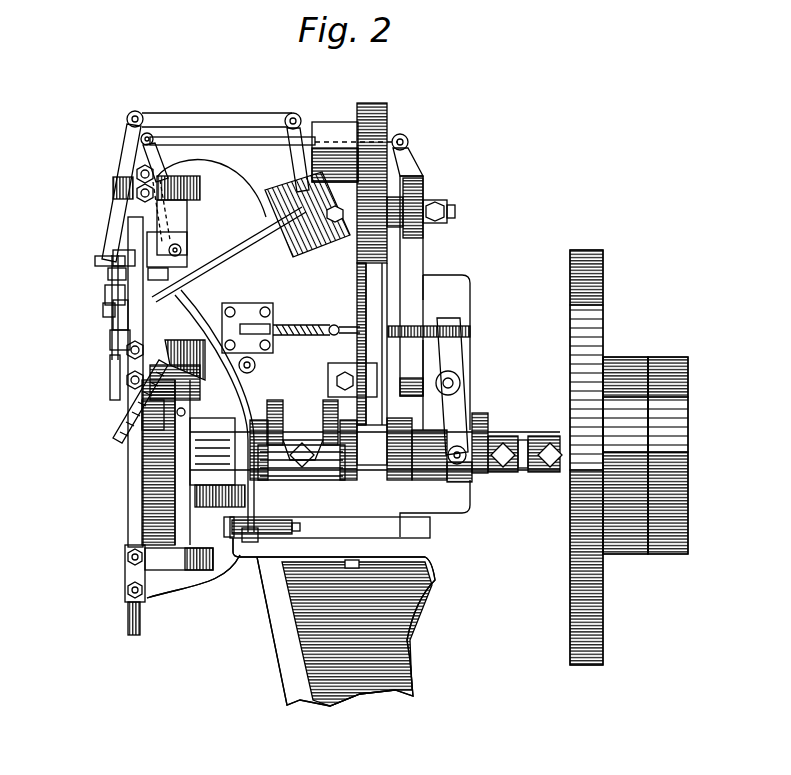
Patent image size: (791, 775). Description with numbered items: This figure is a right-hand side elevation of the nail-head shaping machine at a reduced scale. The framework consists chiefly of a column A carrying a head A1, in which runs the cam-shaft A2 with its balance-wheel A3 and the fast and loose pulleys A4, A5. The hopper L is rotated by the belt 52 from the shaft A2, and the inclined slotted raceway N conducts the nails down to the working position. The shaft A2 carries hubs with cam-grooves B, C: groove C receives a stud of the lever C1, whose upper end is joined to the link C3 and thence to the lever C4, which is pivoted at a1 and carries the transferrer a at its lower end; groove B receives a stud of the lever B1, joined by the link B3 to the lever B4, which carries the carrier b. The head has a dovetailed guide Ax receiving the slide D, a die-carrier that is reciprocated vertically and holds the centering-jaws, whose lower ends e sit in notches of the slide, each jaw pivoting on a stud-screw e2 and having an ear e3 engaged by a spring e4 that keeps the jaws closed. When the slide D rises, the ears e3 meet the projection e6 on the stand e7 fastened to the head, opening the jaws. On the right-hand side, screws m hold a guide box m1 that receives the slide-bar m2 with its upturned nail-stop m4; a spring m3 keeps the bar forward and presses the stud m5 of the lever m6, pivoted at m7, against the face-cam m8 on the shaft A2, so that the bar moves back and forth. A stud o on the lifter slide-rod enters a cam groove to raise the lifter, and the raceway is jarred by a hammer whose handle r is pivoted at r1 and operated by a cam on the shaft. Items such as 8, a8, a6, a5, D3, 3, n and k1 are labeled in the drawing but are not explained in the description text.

The link B3 is at (192, 120).
The link C3 is at (232, 140).
The lever B4 is at (130, 150).
The lever C4 is at (146, 150).
The lever B1 is at (297, 122).
The hopper L is at (388, 122).
The lever C1 is at (312, 420).
The lower ends of the nail-centering jaws e is at (195, 240).
The arc guide 8 is at (211, 188).
The inclined slotted raceway N is at (229, 254).
The pivot of lever C4 a1 is at (86, 340).
The transferrer a is at (158, 264).
The slide D is at (128, 497).
The gear column a8 is at (142, 525).
The block a6 is at (144, 432).
The inclined bar a5 is at (116, 412).
The bracket D3 is at (178, 372).
The roller or stud o is at (185, 412).
The hammer handle r is at (240, 375).
The pivot 3 is at (235, 373).
The stand e7 is at (145, 226).
The roller or projection e6 is at (95, 260).
The carrier b is at (118, 275).
The ear e3 is at (115, 290).
The stud-screw e2 is at (103, 312).
The plate n is at (108, 307).
The plate k1 is at (112, 335).
The spring e4 is at (116, 340).
The nail-stop m4 is at (128, 365).
The guide plate or box m1 is at (250, 318).
The screws m is at (301, 314).
The spring m3 is at (336, 326).
The slide-bar m2 is at (338, 340).
The column A is at (405, 628).
The dovetailed guide Ax is at (222, 575).
The pivot of hammer handle r1 is at (300, 527).
The head A1 is at (460, 298).
The face-cam m8 is at (490, 420).
The pivot of lever m6 m7 is at (460, 384).
The lever m6 is at (452, 416).
The roller or stud m5 is at (466, 480).
The cam-groove B is at (290, 470).
The cam-groove C is at (328, 470).
The belt 52 is at (372, 432).
The cam-shaft A2 is at (520, 472).
The balance-wheel A3 is at (584, 252).
The fast pulley A4 is at (622, 362).
The loose pulley A5 is at (668, 365).